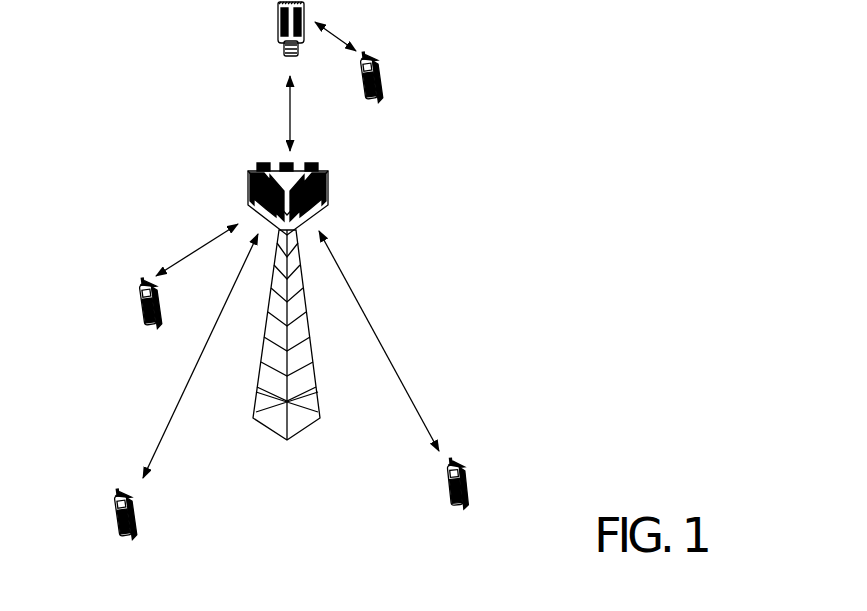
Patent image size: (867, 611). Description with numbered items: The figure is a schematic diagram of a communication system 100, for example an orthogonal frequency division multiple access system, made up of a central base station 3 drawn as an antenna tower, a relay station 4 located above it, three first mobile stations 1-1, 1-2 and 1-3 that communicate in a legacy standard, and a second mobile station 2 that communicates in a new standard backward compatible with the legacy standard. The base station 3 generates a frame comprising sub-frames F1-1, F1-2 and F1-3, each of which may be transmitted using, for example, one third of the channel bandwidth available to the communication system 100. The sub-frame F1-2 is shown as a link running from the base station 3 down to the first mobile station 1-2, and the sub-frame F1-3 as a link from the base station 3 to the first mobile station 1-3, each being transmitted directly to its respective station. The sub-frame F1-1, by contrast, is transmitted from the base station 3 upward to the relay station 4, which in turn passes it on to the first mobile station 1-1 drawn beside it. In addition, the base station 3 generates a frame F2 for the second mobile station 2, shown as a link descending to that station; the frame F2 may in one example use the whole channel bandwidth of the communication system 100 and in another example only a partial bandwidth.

The communication system 100 is at (52, 70).
The relay station 4 is at (277, 38).
The first mobile station 1-1 is at (377, 72).
The first mobile station 1-2 is at (467, 476).
The first mobile station 1-3 is at (136, 305).
The second mobile station 2 is at (113, 528).
The base station 3 is at (323, 163).
The sub-frame F1-1 is at (263, 113).
The sub-frame F1-2 is at (379, 341).
The sub-frame F1-3 is at (197, 249).
The frame F2 is at (200, 356).